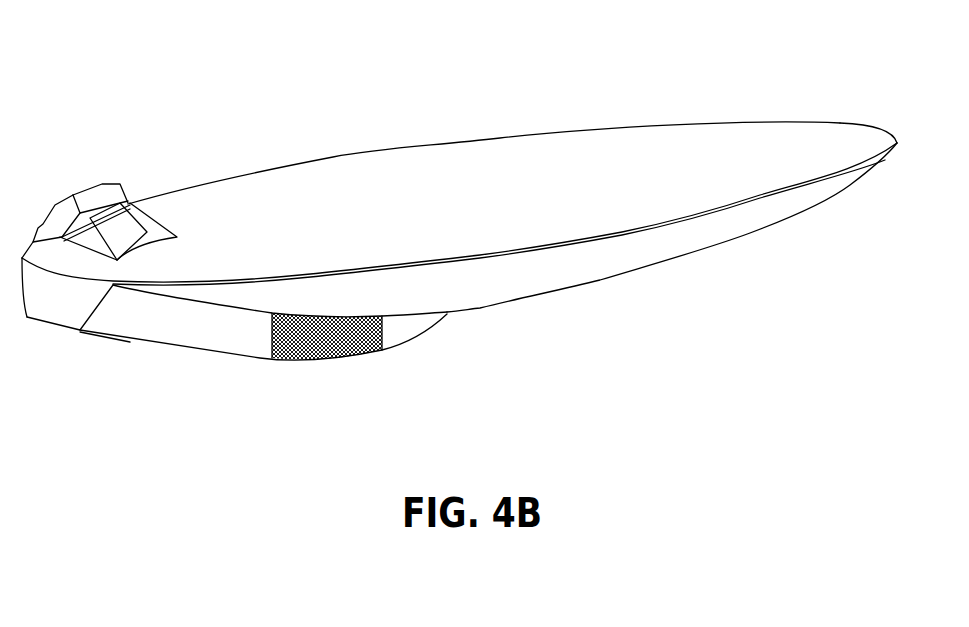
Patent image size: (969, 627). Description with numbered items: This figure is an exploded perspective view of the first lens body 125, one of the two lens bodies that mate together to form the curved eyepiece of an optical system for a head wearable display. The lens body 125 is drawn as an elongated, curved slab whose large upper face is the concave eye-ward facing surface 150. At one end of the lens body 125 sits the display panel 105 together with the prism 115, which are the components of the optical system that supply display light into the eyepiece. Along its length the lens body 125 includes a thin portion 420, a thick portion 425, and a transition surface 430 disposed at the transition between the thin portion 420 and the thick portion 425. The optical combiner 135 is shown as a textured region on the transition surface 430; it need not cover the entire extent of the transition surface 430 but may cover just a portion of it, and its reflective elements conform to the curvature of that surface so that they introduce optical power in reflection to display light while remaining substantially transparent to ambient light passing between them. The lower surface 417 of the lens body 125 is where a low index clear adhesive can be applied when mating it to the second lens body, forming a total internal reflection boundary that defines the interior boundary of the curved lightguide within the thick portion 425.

The first lens body 125 is at (682, 78).
The concave eye-ward facing surface 150 is at (427, 177).
The display panel 105 is at (102, 183).
The prism 115 is at (123, 225).
The thin portion 420 is at (622, 233).
The thick portion 425 is at (75, 313).
The transition surface 430 is at (250, 345).
The optical combiner 135 is at (355, 347).
The surface 417 is at (98, 373).